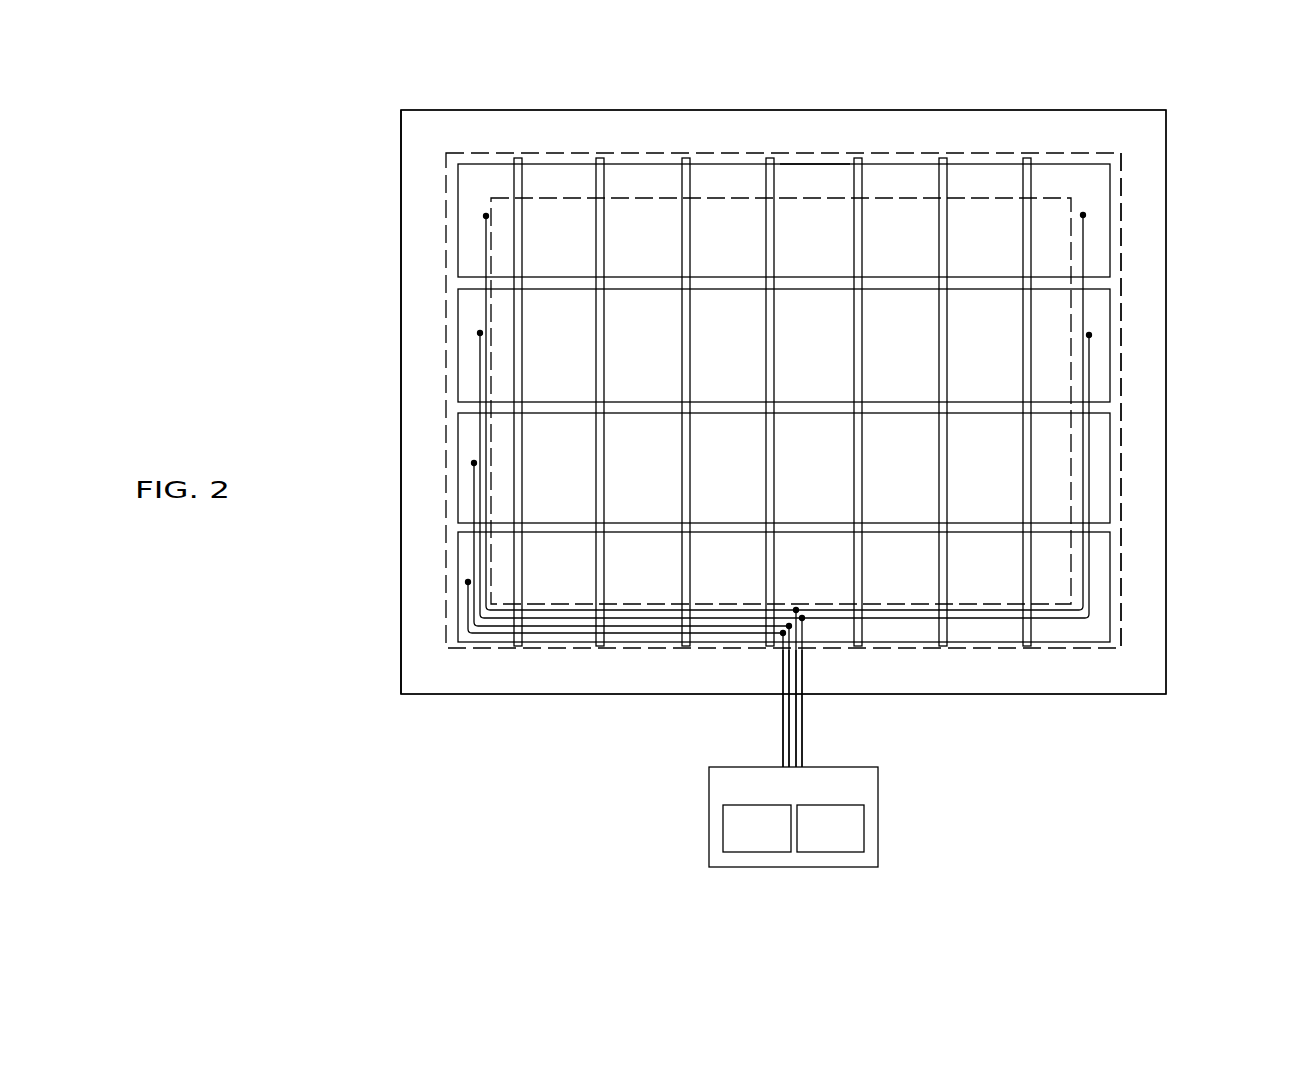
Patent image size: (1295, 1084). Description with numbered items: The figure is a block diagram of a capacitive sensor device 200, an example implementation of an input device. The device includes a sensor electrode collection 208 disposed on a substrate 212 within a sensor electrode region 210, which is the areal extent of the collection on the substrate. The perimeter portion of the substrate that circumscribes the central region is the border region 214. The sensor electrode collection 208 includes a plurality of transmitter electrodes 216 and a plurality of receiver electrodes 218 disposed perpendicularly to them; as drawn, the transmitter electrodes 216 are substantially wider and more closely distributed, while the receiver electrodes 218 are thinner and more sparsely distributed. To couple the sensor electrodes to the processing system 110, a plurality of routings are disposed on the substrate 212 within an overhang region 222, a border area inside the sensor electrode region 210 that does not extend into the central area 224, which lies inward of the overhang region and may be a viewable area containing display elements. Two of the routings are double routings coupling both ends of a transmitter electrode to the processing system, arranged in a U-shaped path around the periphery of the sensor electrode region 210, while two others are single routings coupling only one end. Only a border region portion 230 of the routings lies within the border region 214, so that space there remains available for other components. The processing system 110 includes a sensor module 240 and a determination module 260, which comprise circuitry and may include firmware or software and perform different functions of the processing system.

The capacitive sensor device 200 is at (410, 64).
The sensor electrode collection 208 is at (448, 184).
The sensor electrode region 210 is at (1121, 195).
The substrate 212 is at (401, 387).
The border region 214 is at (660, 126).
The transmitter electrodes 216 is at (458, 244).
The receiver electrodes 218 is at (518, 648).
The overhang region 222 is at (813, 178).
The central area 224 is at (1071, 302).
The border region portion 230 is at (808, 652).
The processing system 110 is at (813, 797).
The sensor module 240 is at (777, 842).
The determination module 260 is at (850, 842).